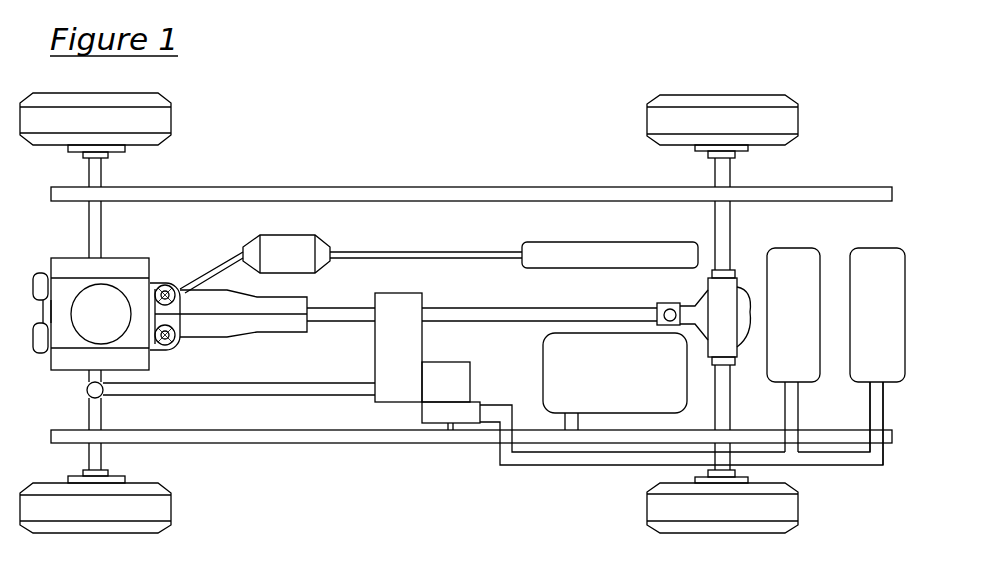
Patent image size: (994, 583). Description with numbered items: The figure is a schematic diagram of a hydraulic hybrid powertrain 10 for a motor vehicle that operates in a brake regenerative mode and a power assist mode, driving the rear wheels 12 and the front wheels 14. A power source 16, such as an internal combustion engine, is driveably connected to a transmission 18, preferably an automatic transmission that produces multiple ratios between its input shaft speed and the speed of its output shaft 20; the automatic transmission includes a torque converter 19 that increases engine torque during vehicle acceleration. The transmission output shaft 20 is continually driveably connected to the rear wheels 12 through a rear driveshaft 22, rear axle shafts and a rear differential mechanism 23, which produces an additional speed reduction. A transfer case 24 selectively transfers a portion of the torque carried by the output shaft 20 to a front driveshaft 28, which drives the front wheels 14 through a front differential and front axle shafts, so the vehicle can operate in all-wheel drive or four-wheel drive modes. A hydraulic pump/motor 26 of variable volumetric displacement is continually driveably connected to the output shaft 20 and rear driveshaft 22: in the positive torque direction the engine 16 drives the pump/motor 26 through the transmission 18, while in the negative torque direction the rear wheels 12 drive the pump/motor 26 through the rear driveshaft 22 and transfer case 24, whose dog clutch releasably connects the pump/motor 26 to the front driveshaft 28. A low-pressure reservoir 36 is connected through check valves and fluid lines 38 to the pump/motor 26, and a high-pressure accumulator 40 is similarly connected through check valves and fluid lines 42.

The hydraulic hybrid powertrain 10 is at (404, 116).
The rear wheels 12 is at (710, 132).
The front wheels 14 is at (83, 130).
The power source 16 is at (89, 324).
The transmission 18 is at (196, 341).
The torque converter 19 is at (157, 352).
The transmission output shaft 20 is at (344, 321).
The rear driveshaft 22 is at (543, 308).
The rear differential mechanism 23 is at (725, 290).
The transfer case 24 is at (387, 359).
The hydraulic pump/motor 26 is at (433, 392).
The front driveshaft 28 is at (207, 398).
The reservoir 36 is at (866, 327).
The fluid lines 38 is at (870, 405).
The accumulator 40 is at (781, 327).
The fluid lines 42 is at (785, 405).